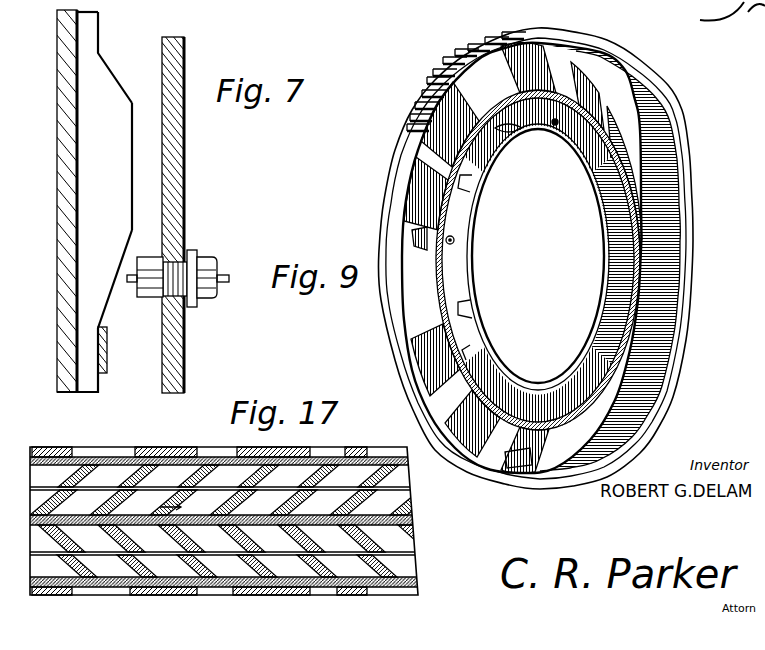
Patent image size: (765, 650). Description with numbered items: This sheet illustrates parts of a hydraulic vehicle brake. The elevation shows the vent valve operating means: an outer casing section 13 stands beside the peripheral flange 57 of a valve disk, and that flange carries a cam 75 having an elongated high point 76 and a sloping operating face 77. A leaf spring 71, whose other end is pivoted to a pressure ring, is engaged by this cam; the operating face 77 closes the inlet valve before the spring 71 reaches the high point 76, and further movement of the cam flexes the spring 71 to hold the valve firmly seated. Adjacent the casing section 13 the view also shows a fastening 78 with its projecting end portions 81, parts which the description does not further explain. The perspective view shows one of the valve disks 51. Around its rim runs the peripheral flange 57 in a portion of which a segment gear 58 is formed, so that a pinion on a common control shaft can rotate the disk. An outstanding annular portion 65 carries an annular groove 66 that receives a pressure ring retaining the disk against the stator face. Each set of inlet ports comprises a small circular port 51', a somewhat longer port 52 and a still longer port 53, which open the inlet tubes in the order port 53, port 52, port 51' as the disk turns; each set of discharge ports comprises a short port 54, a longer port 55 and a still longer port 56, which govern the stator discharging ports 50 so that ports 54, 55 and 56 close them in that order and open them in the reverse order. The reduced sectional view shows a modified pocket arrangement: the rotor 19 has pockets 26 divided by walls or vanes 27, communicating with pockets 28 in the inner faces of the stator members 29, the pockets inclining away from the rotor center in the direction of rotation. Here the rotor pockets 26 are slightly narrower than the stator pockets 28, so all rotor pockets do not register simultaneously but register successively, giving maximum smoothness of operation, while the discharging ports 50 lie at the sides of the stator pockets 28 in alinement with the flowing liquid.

In FIG. 7, the outer casing section 13 is at (190, 211).
In FIG. 17, the rotor 19 is at (411, 500).
In FIG. 17, the rotor pockets 26 is at (241, 523).
In FIG. 17, the walls or vanes 27 is at (200, 503).
In FIG. 17, the stator pockets 28 is at (246, 521).
In FIG. 17, the stator members 29 is at (48, 449).
In FIG. 17, the discharging ports 50 is at (233, 523).
In FIG. 7, the valve disk 51 is at (49, 201).
In FIG. 9, the valve disk 51 is at (395, 193).
In FIG. 17, the valve disk 51 is at (233, 520).
In FIG. 9, the circular inlet port 51' is at (540, 260).
In FIG. 9, the inlet port 52 is at (505, 133).
In FIG. 9, the inlet port 53 is at (458, 183).
In FIG. 9, the discharge port 54 is at (425, 238).
In FIG. 17, the discharge port 54 is at (328, 595).
In FIG. 9, the discharge port 55 is at (452, 168).
In FIG. 17, the discharge port 55 is at (208, 450).
In FIG. 9, the discharge port 56 is at (493, 80).
In FIG. 17, the discharge port 56 is at (97, 450).
In FIG. 7, the peripheral flange 57 is at (100, 50).
In FIG. 9, the peripheral flange 57 is at (590, 42).
In FIG. 9, the segment gear 58 is at (476, 46).
In FIG. 9, the annular portion 65 is at (681, 224).
In FIG. 9, the annular groove 66 is at (672, 270).
In FIG. 7, the leaf spring 71 is at (108, 366).
In FIG. 7, the cam 75 is at (90, 182).
In FIG. 7, the elongated high point 76 is at (133, 165).
In FIG. 9, the elongated high point 76 is at (683, 103).
In FIG. 7, the sloping operating face 77 is at (110, 294).
In FIG. 9, the sloping operating face 77 is at (690, 176).
In FIG. 7, the bolt 78 is at (172, 262).
In FIG. 7, the bolt stem 81 is at (127, 274).